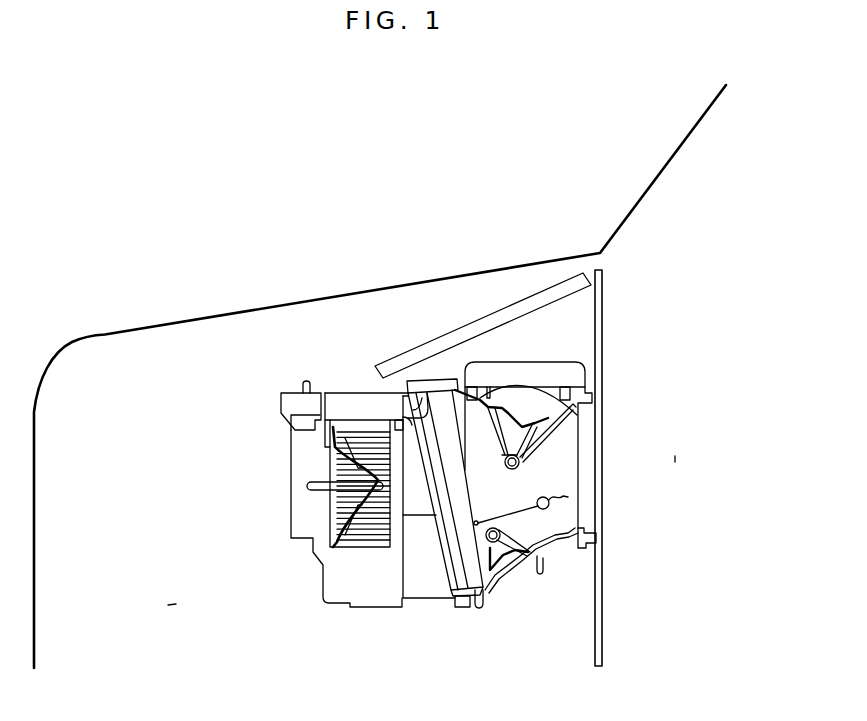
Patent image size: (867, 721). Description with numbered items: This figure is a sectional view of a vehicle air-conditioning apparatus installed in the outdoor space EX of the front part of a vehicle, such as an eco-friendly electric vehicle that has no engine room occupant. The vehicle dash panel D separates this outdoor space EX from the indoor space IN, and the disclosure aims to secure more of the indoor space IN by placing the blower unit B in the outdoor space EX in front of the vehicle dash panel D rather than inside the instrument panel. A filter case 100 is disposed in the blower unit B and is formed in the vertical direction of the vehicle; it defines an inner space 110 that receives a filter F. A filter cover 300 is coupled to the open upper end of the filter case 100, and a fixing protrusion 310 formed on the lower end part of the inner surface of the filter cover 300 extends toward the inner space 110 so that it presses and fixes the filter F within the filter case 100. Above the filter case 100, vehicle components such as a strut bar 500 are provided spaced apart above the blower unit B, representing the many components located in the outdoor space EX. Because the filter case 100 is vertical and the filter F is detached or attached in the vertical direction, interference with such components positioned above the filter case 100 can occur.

The filter case 100 is at (427, 556).
The inner space 110 is at (428, 447).
The filter cover 300 is at (435, 379).
The fixing protrusion 310 is at (410, 403).
The strut bar 500 is at (493, 312).
The blower unit B is at (323, 539).
The vehicle dash panel D is at (605, 398).
The filter F is at (453, 488).
The indoor space IN is at (675, 459).
The outdoor space EX is at (172, 604).